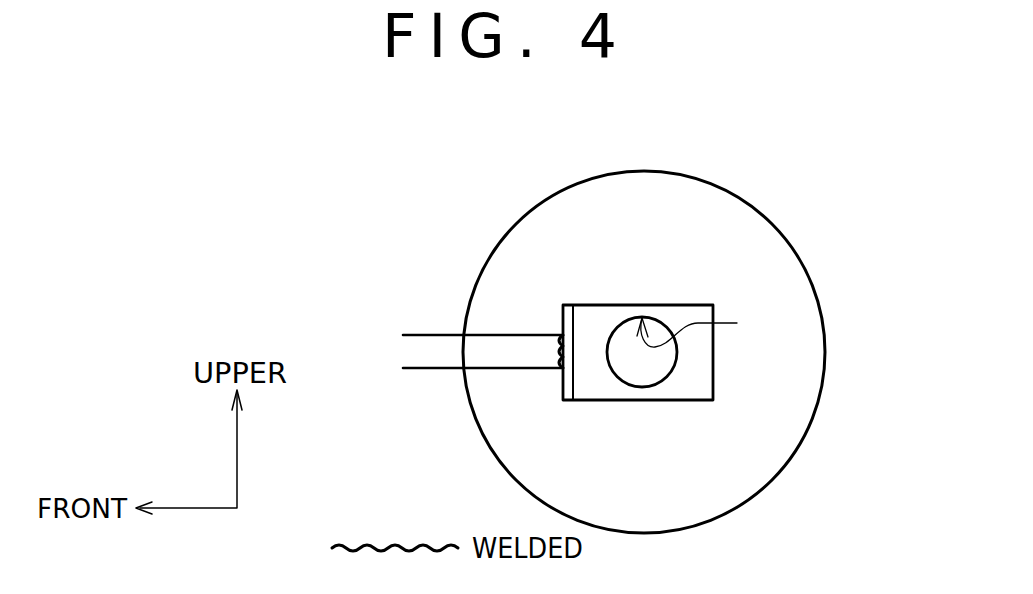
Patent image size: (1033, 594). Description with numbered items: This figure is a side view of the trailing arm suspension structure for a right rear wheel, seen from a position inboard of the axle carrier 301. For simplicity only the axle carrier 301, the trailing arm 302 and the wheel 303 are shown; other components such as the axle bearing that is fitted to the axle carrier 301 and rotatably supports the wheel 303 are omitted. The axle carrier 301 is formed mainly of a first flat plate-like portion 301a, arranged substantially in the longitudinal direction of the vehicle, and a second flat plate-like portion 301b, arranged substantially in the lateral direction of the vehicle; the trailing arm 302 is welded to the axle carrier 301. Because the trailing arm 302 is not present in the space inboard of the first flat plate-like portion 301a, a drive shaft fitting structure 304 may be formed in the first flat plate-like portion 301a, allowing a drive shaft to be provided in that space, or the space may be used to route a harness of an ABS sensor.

The axle carrier 301 is at (623, 302).
The first flat plate-like portion 301a is at (667, 389).
The second flat plate-like portion 301b is at (565, 389).
The trailing arm 302 is at (432, 370).
The wheel 303 is at (645, 178).
The drive shaft fitting structure 304 is at (717, 326).